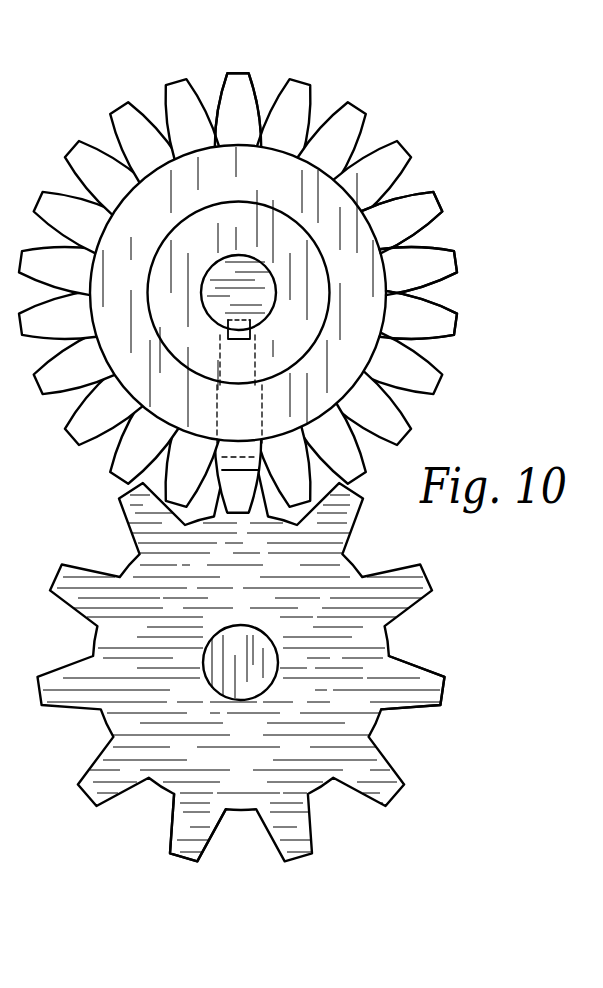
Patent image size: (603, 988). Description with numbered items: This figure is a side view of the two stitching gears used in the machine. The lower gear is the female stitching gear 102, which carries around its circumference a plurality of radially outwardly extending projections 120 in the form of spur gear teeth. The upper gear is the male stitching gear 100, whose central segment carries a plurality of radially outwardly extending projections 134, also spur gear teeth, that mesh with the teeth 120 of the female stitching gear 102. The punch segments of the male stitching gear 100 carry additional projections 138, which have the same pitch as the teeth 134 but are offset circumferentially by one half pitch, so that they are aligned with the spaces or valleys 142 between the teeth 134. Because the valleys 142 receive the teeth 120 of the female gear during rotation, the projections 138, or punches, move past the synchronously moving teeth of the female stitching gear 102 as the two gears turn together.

The male stitching gear 100 is at (467, 133).
The female stitching gear 102 is at (447, 768).
The projections 120 is at (447, 689).
The projections 134 is at (440, 201).
The projections 138 is at (300, 80).
The spaces or valleys 142 is at (377, 127).